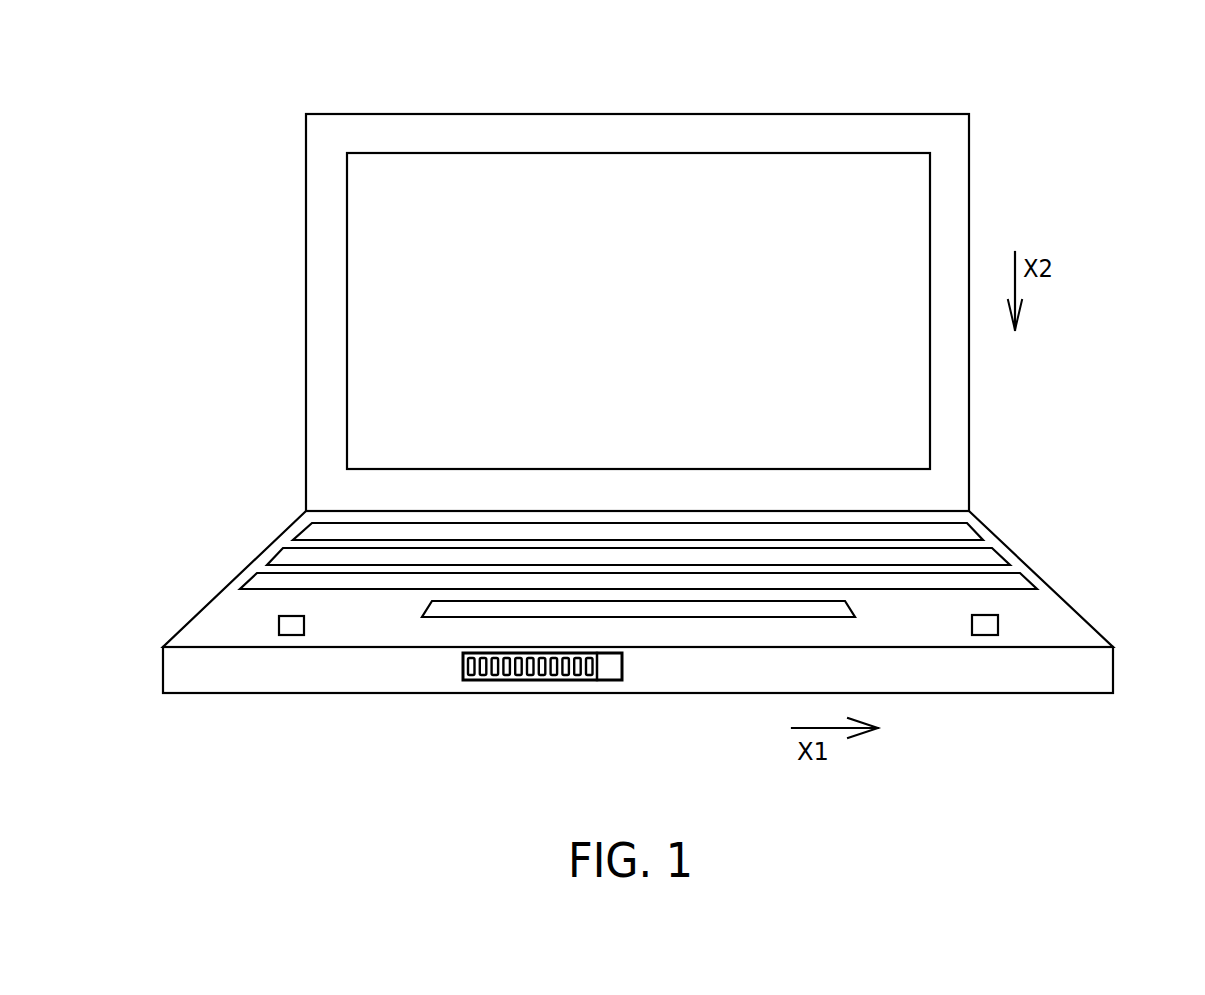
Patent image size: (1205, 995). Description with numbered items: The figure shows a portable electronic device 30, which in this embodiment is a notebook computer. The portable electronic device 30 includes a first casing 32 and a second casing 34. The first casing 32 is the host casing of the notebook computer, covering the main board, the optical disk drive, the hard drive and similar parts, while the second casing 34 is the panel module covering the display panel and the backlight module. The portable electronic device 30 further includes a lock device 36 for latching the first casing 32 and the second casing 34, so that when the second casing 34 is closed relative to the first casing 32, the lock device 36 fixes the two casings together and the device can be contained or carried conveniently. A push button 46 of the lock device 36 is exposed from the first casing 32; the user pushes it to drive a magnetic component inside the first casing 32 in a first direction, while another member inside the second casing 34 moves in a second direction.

The portable electronic device 30 is at (675, 408).
The first casing 32 is at (233, 602).
The second casing 34 is at (317, 200).
The lock device 36 is at (546, 714).
The push button 46 is at (520, 673).